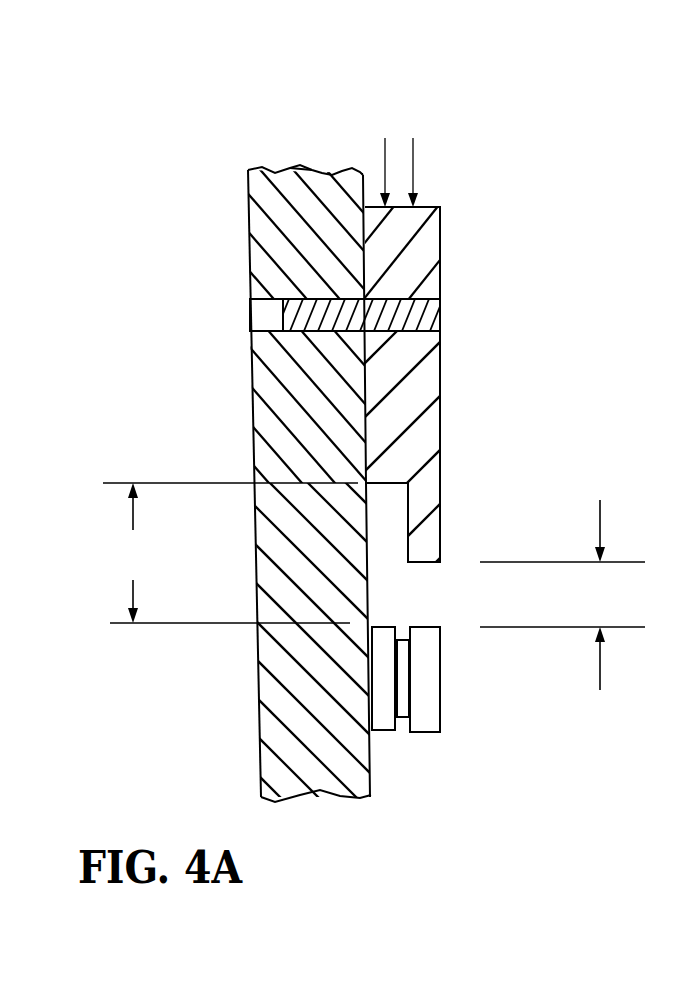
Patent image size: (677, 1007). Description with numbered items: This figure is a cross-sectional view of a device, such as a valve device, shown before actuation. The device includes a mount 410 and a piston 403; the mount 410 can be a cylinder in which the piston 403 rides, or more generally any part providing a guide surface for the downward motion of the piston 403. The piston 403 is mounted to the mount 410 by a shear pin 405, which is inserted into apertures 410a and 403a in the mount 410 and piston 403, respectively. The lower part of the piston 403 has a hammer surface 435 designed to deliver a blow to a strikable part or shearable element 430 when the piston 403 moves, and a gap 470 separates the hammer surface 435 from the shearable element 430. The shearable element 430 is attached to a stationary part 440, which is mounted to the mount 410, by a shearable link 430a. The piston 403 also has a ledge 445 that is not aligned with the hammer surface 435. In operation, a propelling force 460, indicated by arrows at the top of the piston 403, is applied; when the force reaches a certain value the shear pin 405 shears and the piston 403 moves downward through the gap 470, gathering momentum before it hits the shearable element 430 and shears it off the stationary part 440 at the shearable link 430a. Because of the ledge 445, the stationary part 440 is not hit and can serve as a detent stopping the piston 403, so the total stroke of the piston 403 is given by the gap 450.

The mount 410 is at (257, 168).
The aperture in mount 410a is at (312, 288).
The piston 403 is at (427, 237).
The aperture in piston 403a is at (425, 288).
The shear pin 405 is at (250, 313).
The propelling force 460 is at (384, 148).
The ledge 445 is at (387, 479).
The hammer surface 435 is at (427, 561).
The gap 450 is at (230, 553).
The gap 470 is at (562, 595).
The stationary part 440 is at (385, 730).
The shearable link 430a is at (402, 717).
The shearable element 430 is at (428, 732).